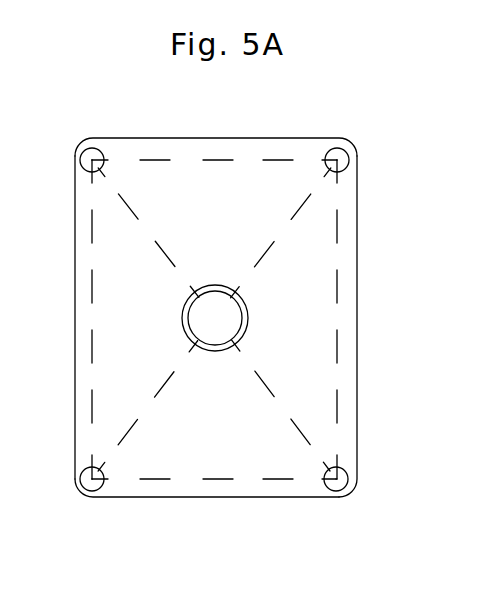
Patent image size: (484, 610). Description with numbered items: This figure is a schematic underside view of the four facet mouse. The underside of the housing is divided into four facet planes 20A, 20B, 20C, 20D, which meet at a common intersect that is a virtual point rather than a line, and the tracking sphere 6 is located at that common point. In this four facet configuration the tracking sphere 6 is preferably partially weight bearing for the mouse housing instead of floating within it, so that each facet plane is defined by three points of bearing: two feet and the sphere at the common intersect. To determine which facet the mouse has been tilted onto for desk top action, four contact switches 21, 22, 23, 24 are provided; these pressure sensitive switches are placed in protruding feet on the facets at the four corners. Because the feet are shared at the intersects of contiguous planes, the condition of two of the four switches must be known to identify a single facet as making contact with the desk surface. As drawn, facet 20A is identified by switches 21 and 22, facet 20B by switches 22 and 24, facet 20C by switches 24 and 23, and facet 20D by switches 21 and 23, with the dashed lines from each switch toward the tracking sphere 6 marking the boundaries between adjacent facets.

The tracking sphere 6 is at (232, 318).
The facet plane 20A is at (122, 388).
The facet plane 20B is at (240, 453).
The facet plane 20C is at (312, 380).
The facet plane 20D is at (219, 203).
The contact switch 21 is at (90, 152).
The contact switch 22 is at (95, 488).
The contact switch 23 is at (345, 152).
The contact switch 24 is at (338, 491).